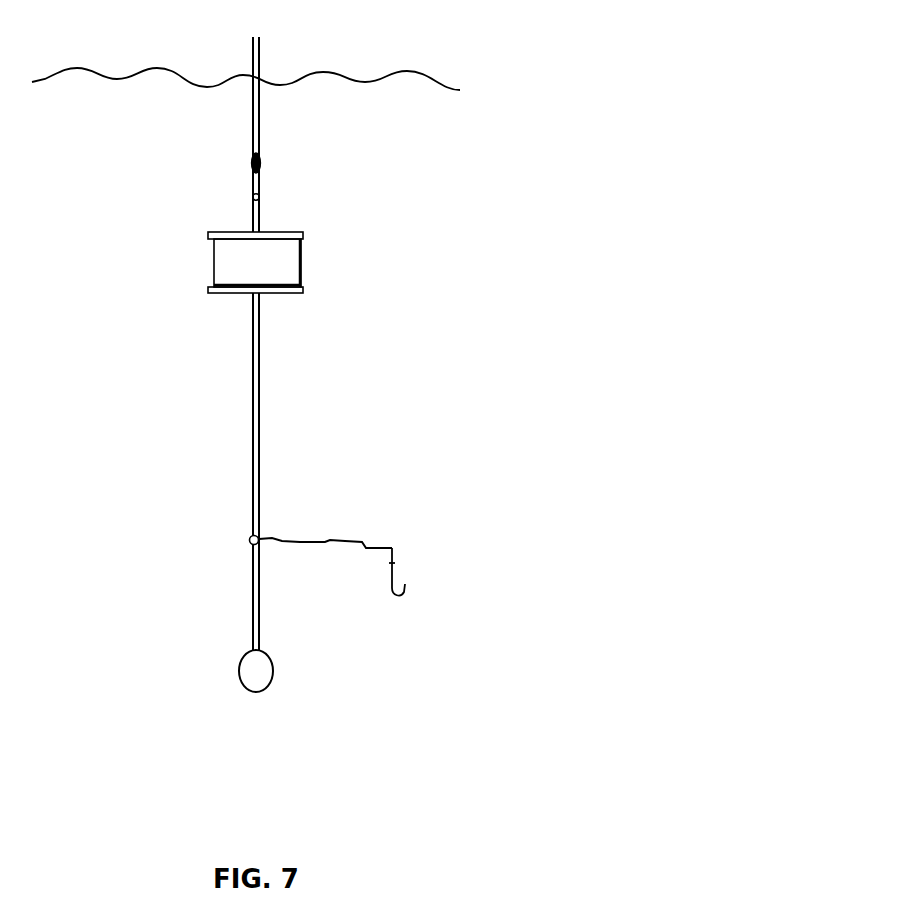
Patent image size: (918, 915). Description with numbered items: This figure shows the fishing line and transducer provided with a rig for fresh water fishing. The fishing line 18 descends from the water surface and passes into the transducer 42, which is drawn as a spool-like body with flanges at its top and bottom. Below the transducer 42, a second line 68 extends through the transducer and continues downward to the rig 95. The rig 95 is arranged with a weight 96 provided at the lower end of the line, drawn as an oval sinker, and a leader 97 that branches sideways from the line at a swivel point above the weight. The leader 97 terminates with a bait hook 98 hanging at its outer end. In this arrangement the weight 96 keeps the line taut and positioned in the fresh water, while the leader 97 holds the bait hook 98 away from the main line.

The fishing line 18 is at (259, 126).
The transducer 42 is at (208, 256).
The second line 68 is at (259, 372).
The rig 95 is at (429, 498).
The weight 96 is at (248, 678).
The leader 97 is at (327, 538).
The bait hook 98 is at (395, 564).